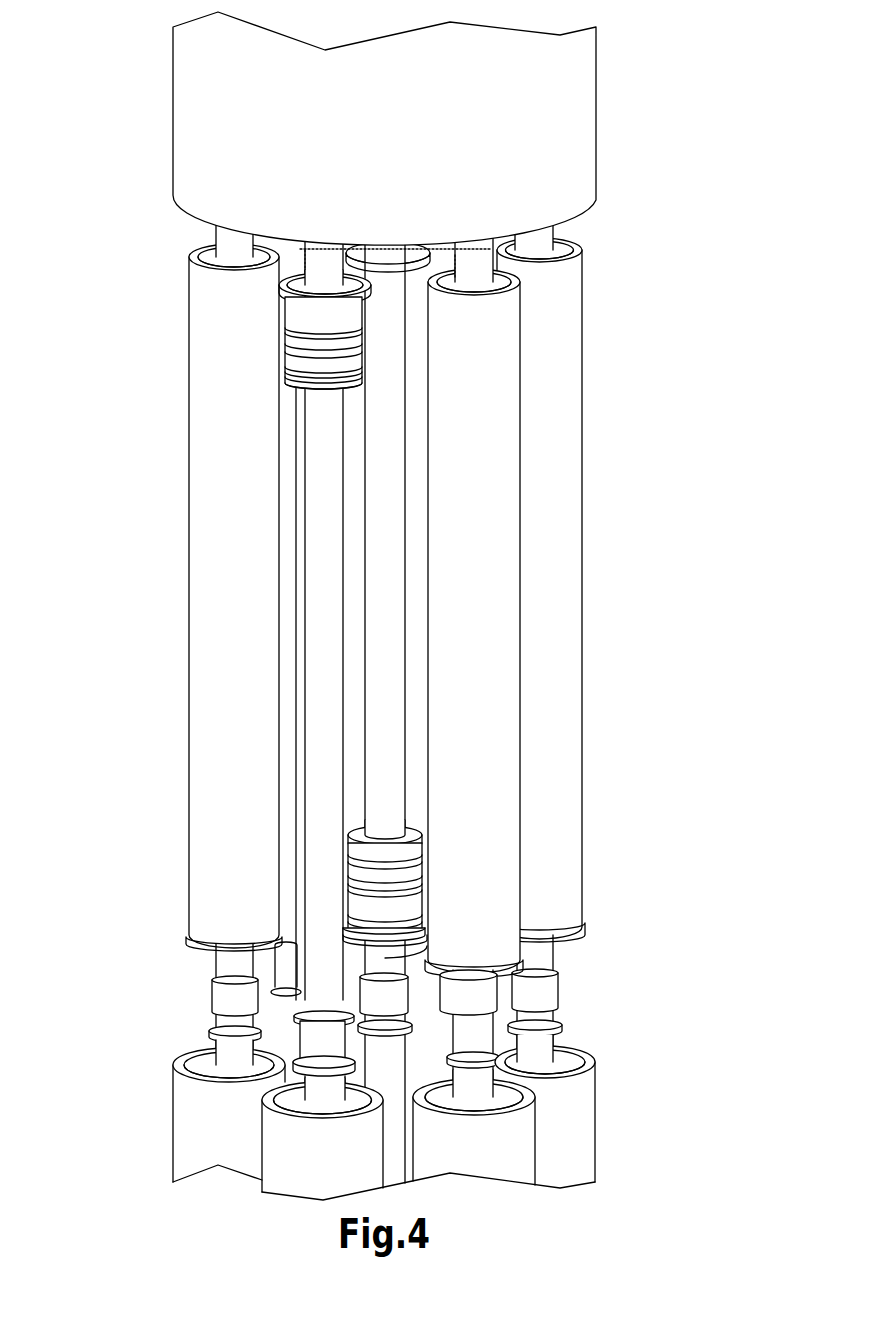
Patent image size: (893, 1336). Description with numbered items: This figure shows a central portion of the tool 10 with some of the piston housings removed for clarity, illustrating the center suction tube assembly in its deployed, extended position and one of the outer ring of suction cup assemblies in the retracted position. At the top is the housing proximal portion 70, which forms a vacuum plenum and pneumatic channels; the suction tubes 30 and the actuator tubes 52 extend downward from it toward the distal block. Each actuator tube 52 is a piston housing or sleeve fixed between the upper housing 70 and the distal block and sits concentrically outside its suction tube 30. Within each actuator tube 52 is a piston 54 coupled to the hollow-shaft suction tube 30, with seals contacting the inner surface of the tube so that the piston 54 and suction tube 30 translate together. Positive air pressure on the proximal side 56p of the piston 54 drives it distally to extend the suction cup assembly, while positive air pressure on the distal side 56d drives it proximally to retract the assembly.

The actuator assembly 10 is at (745, 53).
The proximal portion 70 is at (537, 160).
The actuator tube 52 is at (538, 490).
The suction tube 30 is at (325, 590).
The piston 54 is at (285, 343).
The proximal side 56p is at (283, 290).
The distal side 56d is at (318, 383).